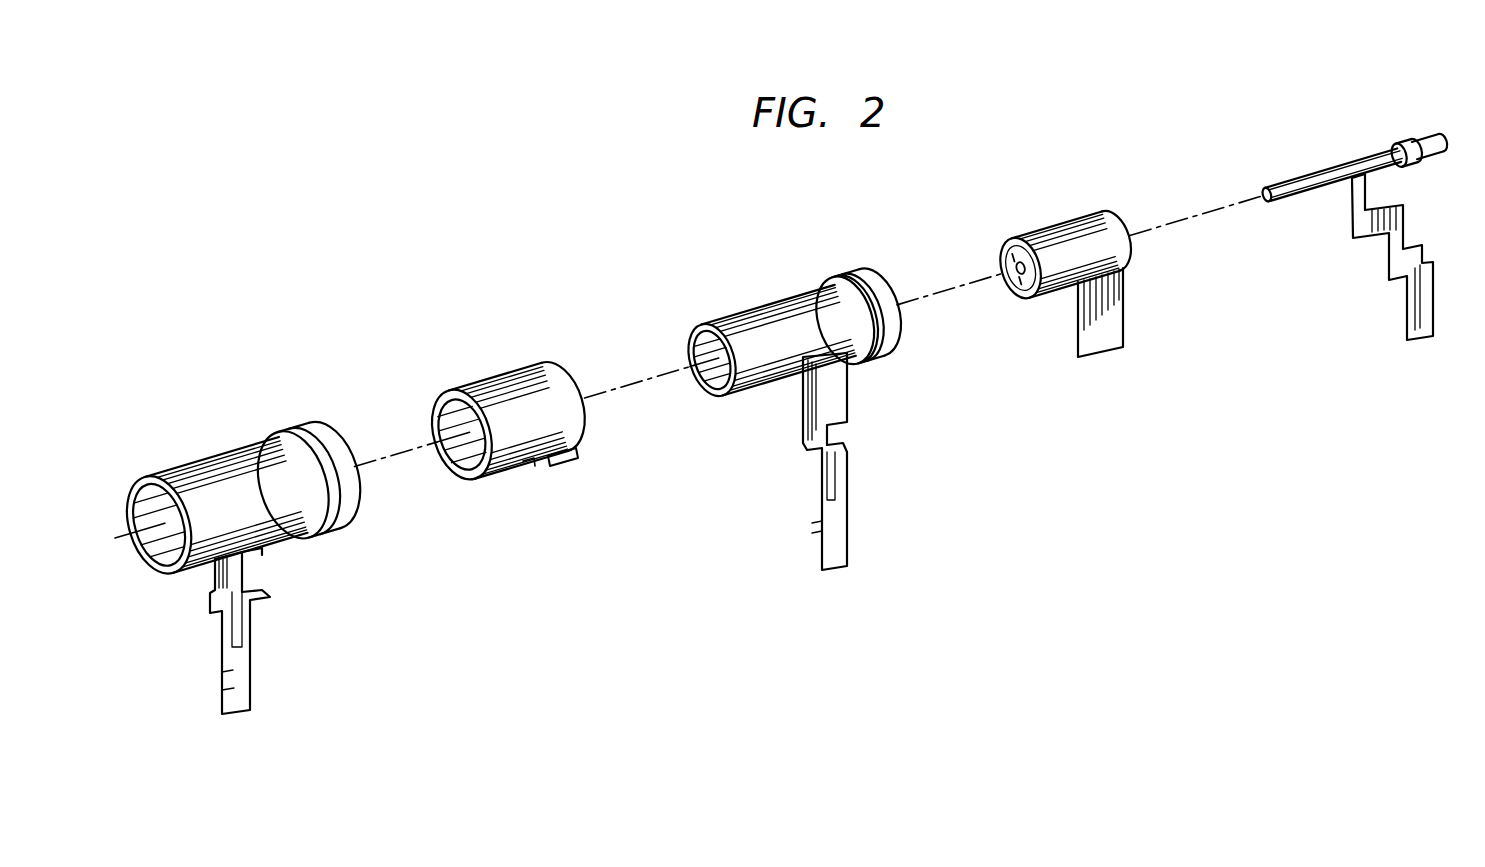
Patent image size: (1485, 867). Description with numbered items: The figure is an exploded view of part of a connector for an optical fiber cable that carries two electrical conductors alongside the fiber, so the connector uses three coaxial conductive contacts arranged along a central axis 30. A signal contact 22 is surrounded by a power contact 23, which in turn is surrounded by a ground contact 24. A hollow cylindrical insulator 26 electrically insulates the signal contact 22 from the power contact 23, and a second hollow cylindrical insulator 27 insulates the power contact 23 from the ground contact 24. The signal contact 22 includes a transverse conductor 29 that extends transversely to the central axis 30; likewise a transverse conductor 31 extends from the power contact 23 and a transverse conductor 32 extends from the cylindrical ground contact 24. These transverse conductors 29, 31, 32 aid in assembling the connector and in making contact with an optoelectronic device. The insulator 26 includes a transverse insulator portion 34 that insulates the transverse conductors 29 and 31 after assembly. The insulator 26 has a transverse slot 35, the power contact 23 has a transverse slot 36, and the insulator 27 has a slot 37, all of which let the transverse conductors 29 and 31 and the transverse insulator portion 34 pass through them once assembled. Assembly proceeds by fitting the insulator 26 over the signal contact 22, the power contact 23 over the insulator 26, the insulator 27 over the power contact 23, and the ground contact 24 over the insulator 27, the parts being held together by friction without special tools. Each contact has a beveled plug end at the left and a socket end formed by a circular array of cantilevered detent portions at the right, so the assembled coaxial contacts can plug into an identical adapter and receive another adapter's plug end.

The signal contact 22 is at (1331, 167).
The power contact 23 is at (784, 300).
The ground contact 24 is at (226, 452).
The hollow cylindrical insulator 26 is at (1058, 226).
The hollow cylindrical insulator 27 is at (492, 377).
The transverse conductor 29 is at (1401, 218).
The central axis 30 is at (1193, 215).
The transverse conductor 31 is at (845, 449).
The transverse conductor 32 is at (218, 654).
The transverse insulator portion 34 is at (1133, 312).
The transverse slot 35 is at (1018, 296).
The transverse slot 36 is at (873, 356).
The slot 37 is at (556, 463).